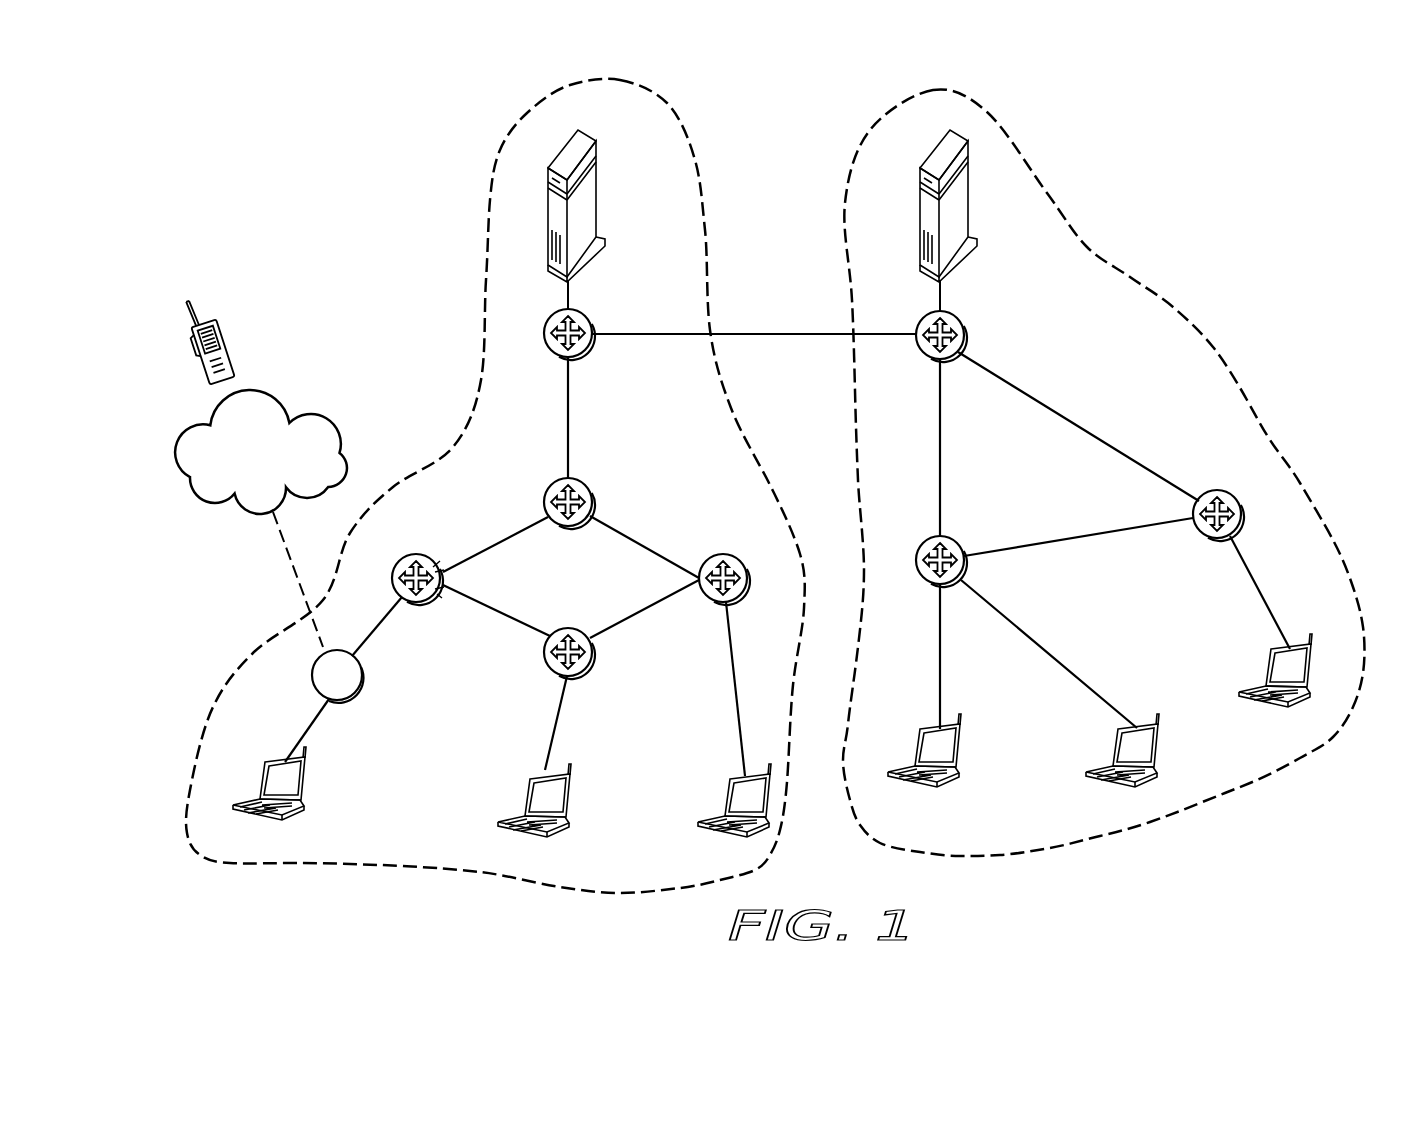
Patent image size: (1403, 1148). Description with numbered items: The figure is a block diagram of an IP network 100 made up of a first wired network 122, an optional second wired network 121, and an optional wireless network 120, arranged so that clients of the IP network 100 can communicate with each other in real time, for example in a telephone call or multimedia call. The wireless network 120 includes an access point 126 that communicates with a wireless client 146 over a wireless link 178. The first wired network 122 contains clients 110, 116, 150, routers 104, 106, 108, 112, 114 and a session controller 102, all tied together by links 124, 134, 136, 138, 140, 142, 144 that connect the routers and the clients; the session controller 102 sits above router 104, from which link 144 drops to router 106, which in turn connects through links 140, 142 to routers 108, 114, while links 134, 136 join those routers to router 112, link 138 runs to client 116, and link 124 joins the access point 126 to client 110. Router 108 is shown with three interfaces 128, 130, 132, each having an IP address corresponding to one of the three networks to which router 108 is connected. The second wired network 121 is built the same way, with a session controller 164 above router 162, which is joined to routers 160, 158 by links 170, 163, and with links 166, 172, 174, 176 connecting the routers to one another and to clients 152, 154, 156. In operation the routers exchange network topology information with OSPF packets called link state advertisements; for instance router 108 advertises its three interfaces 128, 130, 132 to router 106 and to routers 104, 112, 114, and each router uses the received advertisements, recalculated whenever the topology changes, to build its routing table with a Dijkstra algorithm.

The IP network 100 is at (1018, 939).
The session controller 102 is at (548, 215).
The router 104 is at (585, 315).
The router 106 is at (578, 480).
The router 108 is at (400, 560).
The client 110 is at (258, 810).
The router 112 is at (585, 674).
The router 114 is at (732, 556).
The client 116 is at (716, 828).
The wireless network 120 is at (305, 401).
The second wired network 121 is at (890, 107).
The first wired network 122 is at (555, 105).
The link 124 is at (306, 727).
The access point 126 is at (357, 699).
The interface 128 is at (437, 549).
The interface 130 is at (440, 611).
The interface 132 is at (406, 630).
The link 134 is at (500, 607).
The link 136 is at (652, 604).
The link 138 is at (738, 690).
The link 140 is at (491, 539).
The link 142 is at (650, 541).
The link 144 is at (566, 412).
The wireless client 146 is at (222, 320).
The client 150 is at (518, 830).
The client 152 is at (908, 785).
The client 154 is at (1105, 785).
The client 156 is at (1259, 705).
The router 158 is at (1222, 491).
The router 160 is at (922, 538).
The router 162 is at (958, 316).
The link 163 is at (1063, 410).
The session controller 164 is at (920, 215).
The link 166 is at (1052, 535).
The link 170 is at (938, 442).
The link 172 is at (938, 657).
The link 174 is at (1059, 659).
The link 176 is at (1262, 585).
The wireless link 178 is at (289, 566).